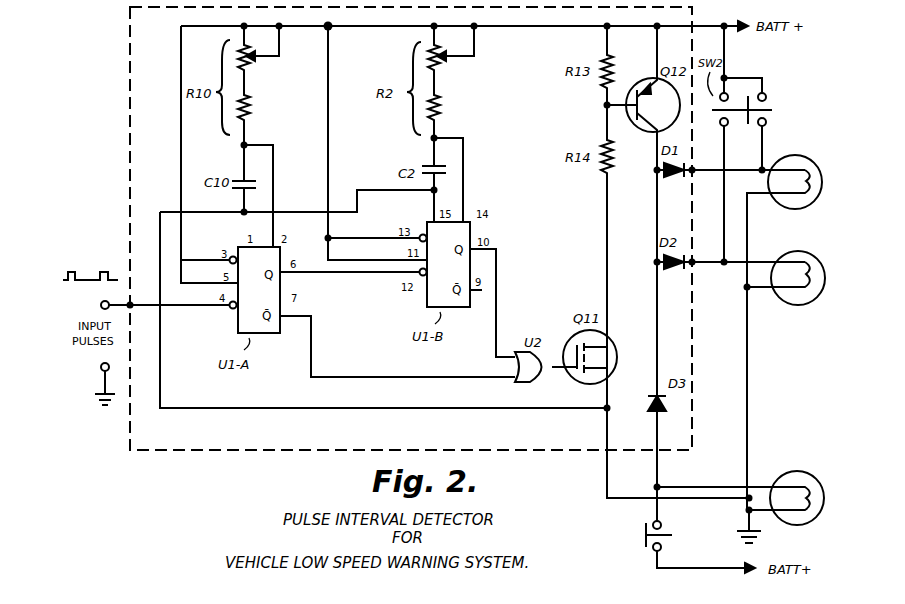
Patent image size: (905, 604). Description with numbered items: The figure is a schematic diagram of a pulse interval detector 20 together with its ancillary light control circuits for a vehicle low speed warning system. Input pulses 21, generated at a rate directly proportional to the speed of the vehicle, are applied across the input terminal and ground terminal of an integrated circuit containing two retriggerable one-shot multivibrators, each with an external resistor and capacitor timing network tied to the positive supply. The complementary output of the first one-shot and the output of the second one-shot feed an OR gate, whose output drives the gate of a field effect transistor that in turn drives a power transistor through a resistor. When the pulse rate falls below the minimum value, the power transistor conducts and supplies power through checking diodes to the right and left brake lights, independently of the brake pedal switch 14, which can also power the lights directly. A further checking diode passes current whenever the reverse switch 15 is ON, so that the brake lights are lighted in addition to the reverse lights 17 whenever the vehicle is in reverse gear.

The brake pedal switch 14 is at (770, 106).
The reverse switch 15 is at (650, 556).
The left brake light 17 is at (815, 522).
The pulse interval detector 20 is at (116, 127).
The input pulses 21 is at (97, 275).